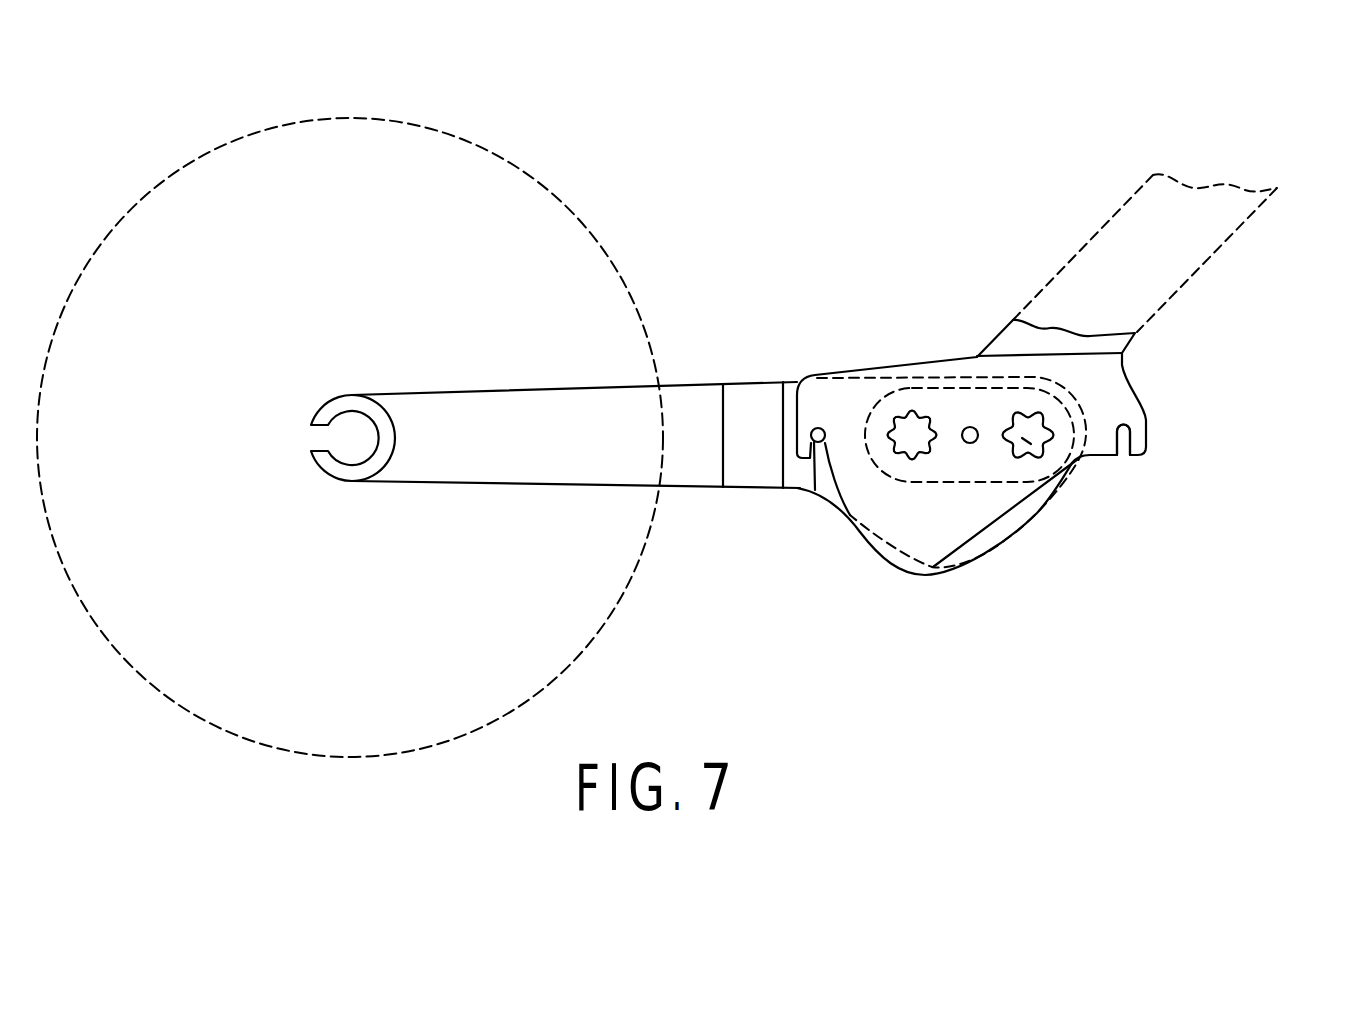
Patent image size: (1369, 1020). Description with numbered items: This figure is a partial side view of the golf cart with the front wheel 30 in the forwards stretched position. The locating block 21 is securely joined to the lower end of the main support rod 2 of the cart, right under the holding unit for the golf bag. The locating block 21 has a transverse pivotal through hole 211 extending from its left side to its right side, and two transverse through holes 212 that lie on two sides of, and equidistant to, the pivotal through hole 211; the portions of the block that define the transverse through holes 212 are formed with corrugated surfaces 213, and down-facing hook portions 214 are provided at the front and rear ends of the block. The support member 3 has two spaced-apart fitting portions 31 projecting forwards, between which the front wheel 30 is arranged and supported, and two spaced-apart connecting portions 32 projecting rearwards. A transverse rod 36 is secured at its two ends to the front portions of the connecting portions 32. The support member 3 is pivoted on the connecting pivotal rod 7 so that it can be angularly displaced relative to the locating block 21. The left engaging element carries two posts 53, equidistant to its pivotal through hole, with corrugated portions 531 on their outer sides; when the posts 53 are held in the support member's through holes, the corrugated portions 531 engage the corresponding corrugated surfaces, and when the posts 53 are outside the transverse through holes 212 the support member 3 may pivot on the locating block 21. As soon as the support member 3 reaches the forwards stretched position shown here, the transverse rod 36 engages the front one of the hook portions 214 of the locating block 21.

The main support rod 2 is at (1122, 207).
The support member 3 is at (691, 380).
The connecting pivotal rod 7 is at (933, 387).
The locating block 21 is at (897, 363).
The front wheel 30 is at (97, 297).
The fitting portions 31 is at (703, 490).
The connecting portions 32 is at (805, 489).
The transverse rod 36 is at (817, 430).
The posts 53 is at (1038, 447).
The pivotal through hole 211 is at (963, 429).
The transverse through holes 212 is at (1031, 420).
The corrugated surfaces 213 is at (972, 427).
The hook portions 214 is at (816, 494).
The corrugated portions 531 is at (1022, 445).